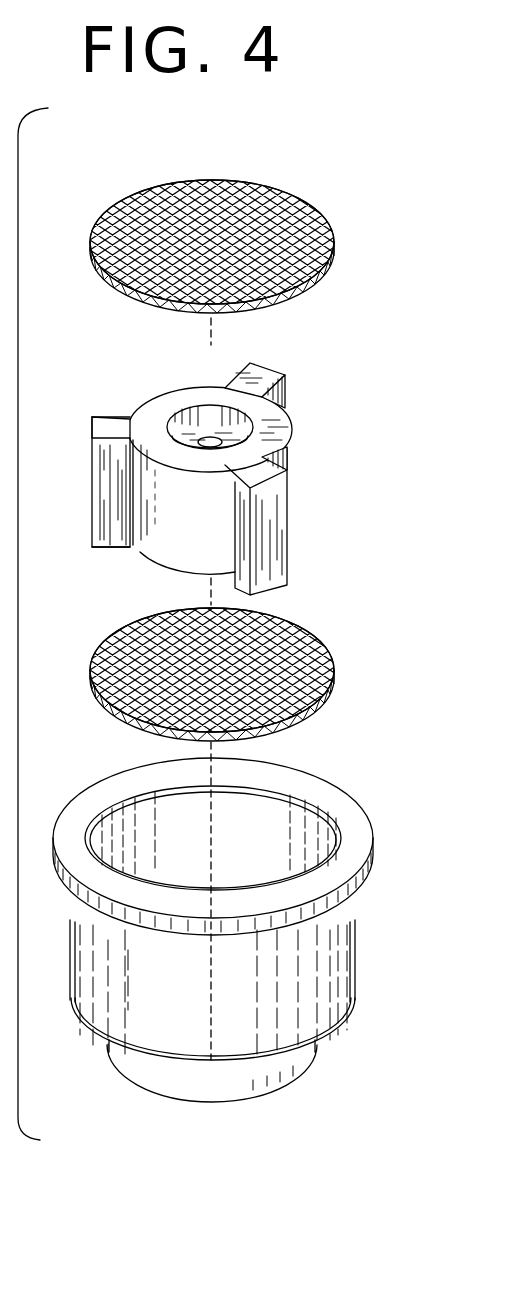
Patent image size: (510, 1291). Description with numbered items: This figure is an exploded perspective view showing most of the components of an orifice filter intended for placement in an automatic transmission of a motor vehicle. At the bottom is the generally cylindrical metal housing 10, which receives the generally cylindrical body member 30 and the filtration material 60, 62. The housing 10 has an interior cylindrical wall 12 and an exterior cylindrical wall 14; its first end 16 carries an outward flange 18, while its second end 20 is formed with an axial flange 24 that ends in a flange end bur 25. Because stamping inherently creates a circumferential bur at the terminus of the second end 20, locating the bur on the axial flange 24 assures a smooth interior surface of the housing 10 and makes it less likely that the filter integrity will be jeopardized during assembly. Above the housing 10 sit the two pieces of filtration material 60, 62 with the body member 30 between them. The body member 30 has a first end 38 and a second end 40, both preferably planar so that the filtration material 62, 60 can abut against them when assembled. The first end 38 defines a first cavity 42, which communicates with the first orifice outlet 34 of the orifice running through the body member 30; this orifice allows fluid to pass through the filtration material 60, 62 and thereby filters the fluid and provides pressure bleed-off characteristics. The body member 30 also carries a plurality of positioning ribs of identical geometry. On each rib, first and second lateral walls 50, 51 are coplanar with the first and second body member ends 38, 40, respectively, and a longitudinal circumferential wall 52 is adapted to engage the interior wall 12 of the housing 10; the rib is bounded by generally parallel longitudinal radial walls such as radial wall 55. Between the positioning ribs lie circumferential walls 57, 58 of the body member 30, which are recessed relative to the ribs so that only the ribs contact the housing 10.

The metal housing 10 is at (231, 932).
The interior cylindrical wall 12 is at (272, 822).
The exterior cylindrical wall 14 is at (350, 983).
The first end of housing 16 is at (229, 834).
The outward flange 18 is at (337, 800).
The second end of housing 20 is at (350, 1017).
The axial flange 24 is at (243, 1088).
The flange end bur 25 is at (260, 1094).
The cylindrical body member 30 is at (214, 466).
The first orifice outlet 34 is at (200, 440).
The first end of body member 38 is at (266, 425).
The second end of body member 40 is at (173, 573).
The first cavity 42 is at (220, 427).
The first lateral wall 50 is at (120, 428).
The second lateral wall 51 is at (117, 548).
The longitudinal circumferential wall 52 is at (82, 471).
The longitudinal radial wall 55 is at (110, 462).
The circumferential wall 57 is at (289, 468).
The circumferential wall 58 is at (170, 502).
The filtration material 60 is at (330, 680).
The filtration material 62 is at (328, 221).